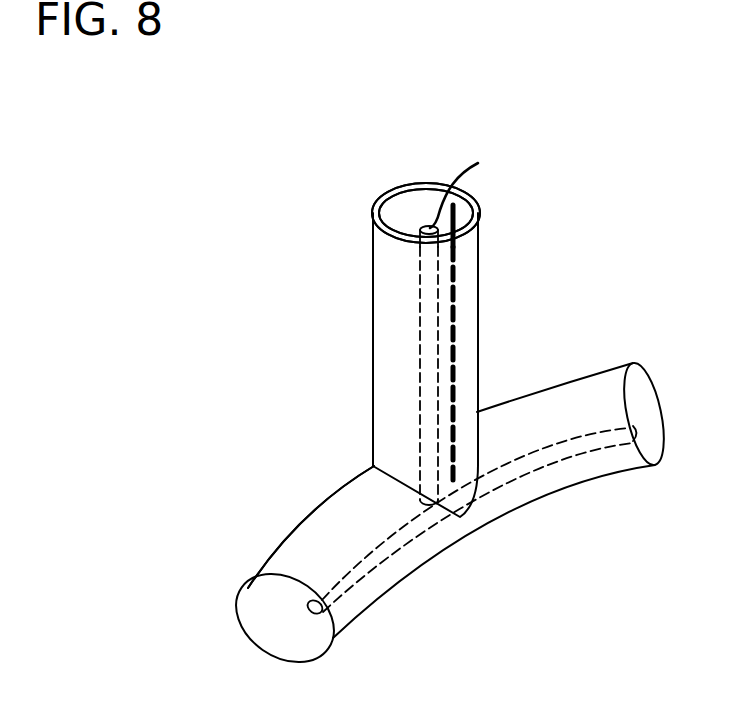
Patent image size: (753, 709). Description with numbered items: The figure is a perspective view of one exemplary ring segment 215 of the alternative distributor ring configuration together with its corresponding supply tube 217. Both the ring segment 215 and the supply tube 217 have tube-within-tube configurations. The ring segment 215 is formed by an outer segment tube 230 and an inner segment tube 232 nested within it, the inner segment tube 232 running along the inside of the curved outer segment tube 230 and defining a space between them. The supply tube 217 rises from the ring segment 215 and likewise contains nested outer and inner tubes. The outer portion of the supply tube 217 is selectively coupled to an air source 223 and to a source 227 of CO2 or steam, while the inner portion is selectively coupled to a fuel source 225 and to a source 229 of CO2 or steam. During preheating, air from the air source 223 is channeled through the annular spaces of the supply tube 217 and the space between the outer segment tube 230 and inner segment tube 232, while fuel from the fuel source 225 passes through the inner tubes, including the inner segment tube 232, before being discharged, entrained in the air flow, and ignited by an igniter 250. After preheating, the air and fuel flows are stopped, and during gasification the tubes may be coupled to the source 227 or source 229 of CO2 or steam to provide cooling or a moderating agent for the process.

The ring segment 215 is at (587, 362).
The supply tube 217 is at (363, 312).
The air source 223 is at (399, 177).
The fuel source 225 is at (478, 163).
The source of CO2 or steam 227 is at (422, 173).
The source of CO2 or steam 229 is at (447, 197).
The outer segment tube 230 is at (315, 510).
The inner segment tube 232 is at (343, 563).
The igniter 250 is at (457, 274).